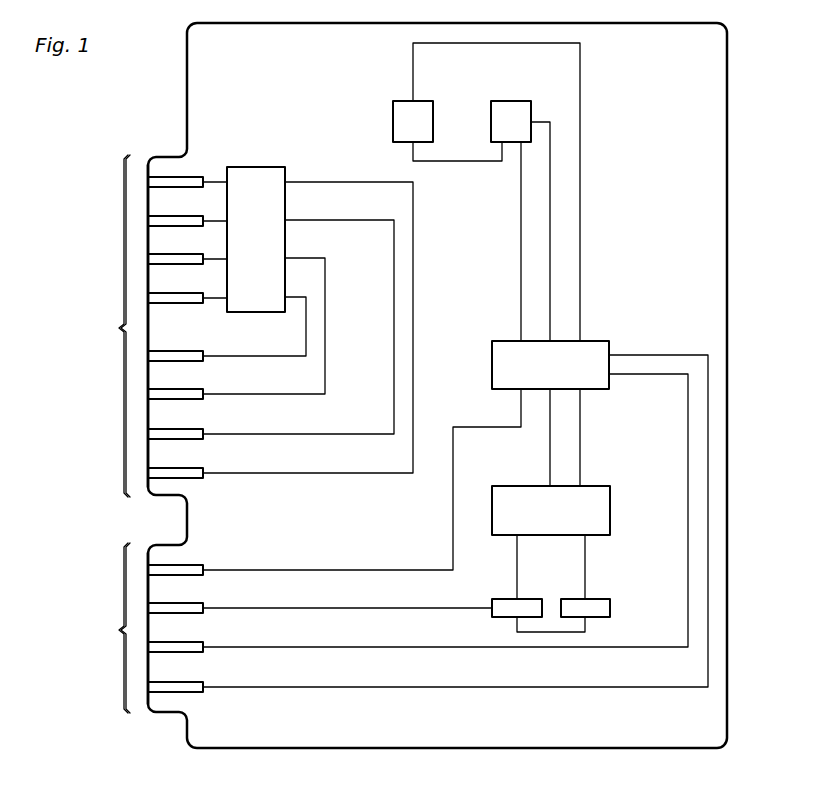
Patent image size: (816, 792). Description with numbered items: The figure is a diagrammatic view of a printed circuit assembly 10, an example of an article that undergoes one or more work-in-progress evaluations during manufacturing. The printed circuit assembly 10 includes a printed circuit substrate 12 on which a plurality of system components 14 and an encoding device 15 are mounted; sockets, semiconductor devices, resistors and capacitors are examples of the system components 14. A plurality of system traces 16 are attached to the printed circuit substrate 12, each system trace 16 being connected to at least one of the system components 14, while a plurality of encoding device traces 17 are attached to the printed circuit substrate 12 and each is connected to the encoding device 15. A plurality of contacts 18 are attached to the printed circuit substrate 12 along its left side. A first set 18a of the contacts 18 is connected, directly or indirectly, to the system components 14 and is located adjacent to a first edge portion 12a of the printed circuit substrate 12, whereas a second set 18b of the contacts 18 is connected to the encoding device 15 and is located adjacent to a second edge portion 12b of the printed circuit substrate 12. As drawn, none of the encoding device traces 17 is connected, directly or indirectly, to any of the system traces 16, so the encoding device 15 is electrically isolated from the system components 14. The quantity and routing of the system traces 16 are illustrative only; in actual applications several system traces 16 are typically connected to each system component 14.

The printed circuit assembly 10 is at (752, 66).
The printed circuit substrate 12 is at (729, 393).
The first edge portion 12a is at (165, 722).
The second edge portion 12b is at (166, 150).
The system components 14 is at (393, 118).
The encoding device 15 is at (256, 166).
The system traces 16 is at (580, 197).
The encoding device traces 17 is at (332, 182).
The contacts 18 is at (176, 306).
The first set of contacts 18a is at (104, 628).
The second set of contacts 18b is at (104, 326).